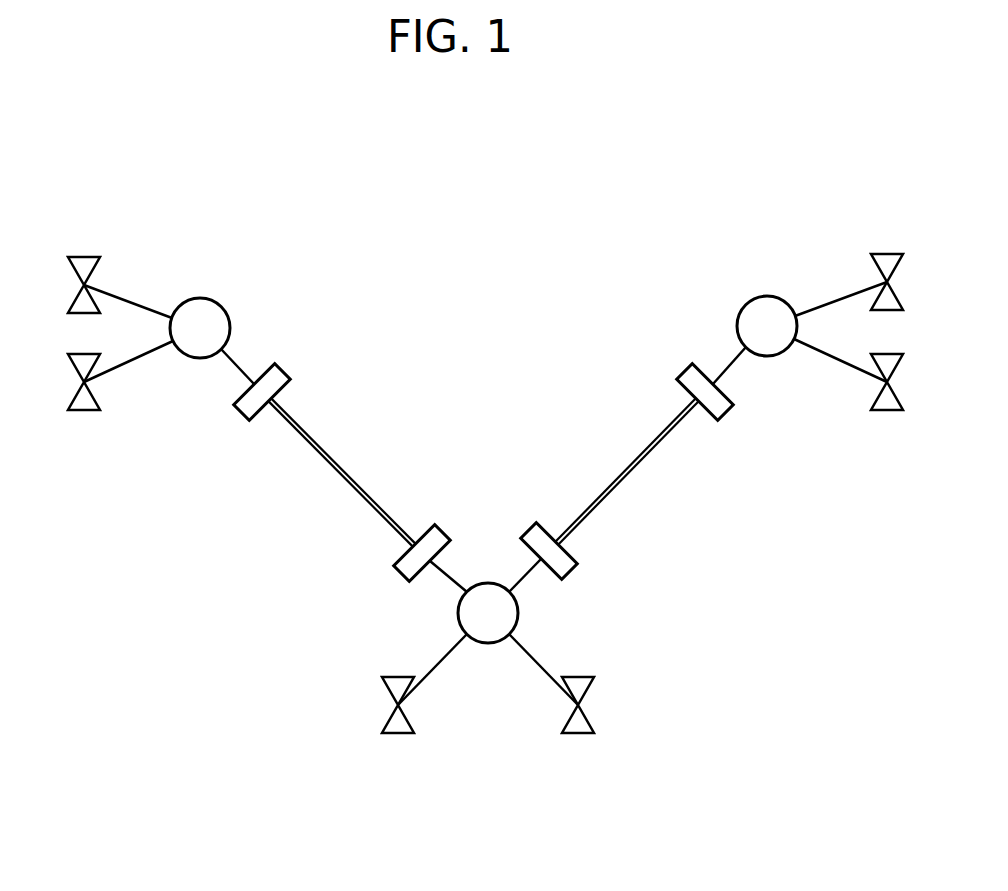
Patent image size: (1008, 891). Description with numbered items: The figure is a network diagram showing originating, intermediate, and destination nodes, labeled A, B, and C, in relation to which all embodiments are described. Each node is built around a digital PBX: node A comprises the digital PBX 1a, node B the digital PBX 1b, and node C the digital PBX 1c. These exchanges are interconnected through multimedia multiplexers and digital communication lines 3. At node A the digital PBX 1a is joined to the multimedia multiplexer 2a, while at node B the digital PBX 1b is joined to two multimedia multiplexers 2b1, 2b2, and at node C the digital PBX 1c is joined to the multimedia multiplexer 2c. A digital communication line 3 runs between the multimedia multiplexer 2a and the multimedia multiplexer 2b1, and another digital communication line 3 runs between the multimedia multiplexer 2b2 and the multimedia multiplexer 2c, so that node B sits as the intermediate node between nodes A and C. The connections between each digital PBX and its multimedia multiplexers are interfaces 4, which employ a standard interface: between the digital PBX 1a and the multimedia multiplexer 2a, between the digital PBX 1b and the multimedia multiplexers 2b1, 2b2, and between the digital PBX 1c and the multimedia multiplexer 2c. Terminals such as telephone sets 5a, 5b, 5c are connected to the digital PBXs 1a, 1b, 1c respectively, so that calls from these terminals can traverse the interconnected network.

The digital PBX 1a is at (223, 305).
The digital PBX 1b is at (518, 615).
The digital PBX 1c is at (765, 296).
The multimedia multiplexer 2a is at (290, 372).
The multimedia multiplexer 2b1 is at (437, 522).
The multimedia multiplexer 2b2 is at (537, 523).
The multimedia multiplexer 2c is at (690, 366).
The digital communication line 3 is at (484, 473).
The interface 4 is at (488, 465).
The telephone set 5a is at (85, 257).
The telephone set 5b is at (398, 733).
The telephone set 5c is at (893, 410).